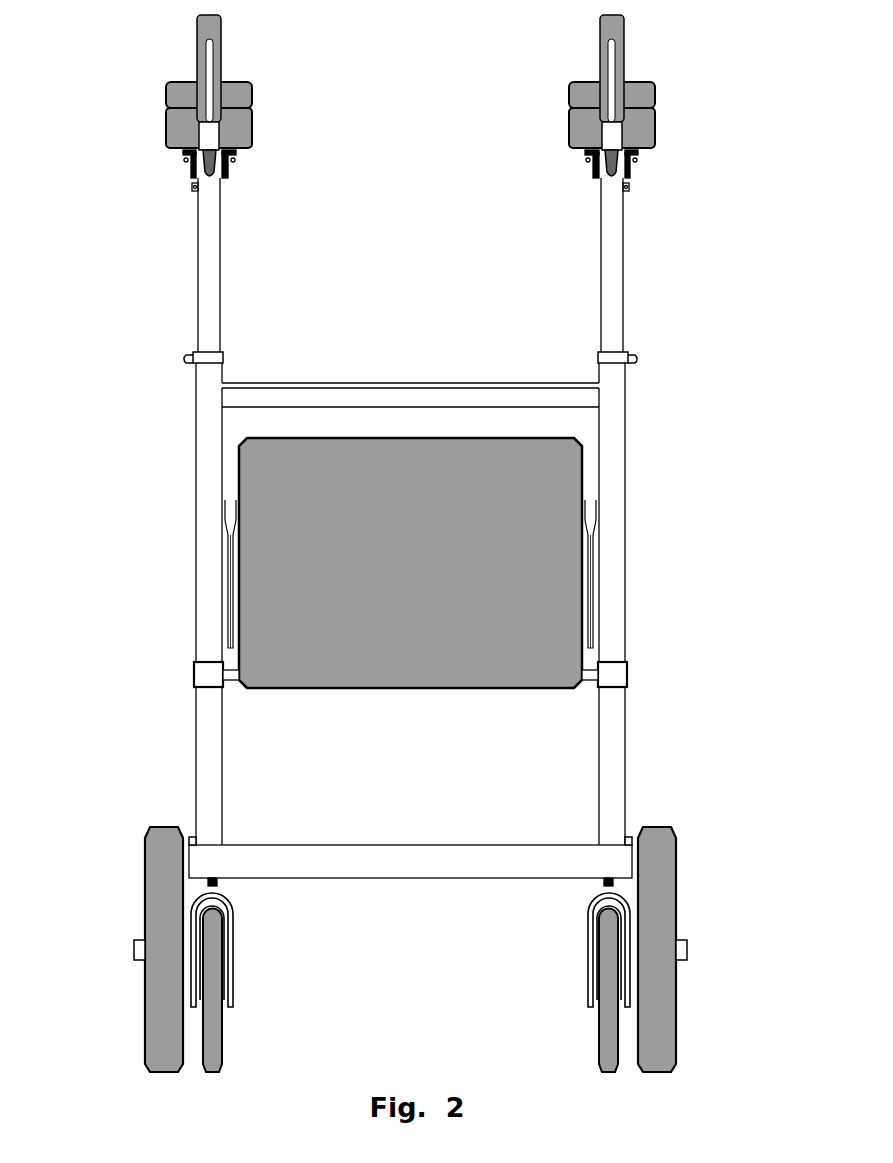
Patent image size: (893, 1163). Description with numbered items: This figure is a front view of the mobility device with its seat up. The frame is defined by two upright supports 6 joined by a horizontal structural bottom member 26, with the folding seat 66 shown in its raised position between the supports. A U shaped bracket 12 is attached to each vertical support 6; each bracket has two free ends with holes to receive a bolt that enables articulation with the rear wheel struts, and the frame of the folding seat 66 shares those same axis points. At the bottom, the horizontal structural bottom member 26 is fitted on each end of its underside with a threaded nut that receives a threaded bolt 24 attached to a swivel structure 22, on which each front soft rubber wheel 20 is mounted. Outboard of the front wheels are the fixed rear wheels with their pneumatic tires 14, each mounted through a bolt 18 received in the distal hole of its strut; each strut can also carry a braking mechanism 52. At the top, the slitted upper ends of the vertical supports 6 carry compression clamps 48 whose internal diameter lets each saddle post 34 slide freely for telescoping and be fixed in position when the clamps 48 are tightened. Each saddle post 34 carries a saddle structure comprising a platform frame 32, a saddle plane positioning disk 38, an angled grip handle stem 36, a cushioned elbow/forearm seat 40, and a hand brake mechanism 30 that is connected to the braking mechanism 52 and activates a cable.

The upright support 6 is at (205, 500).
The U shaped bracket 12 is at (209, 675).
The pneumatic tire 14 is at (163, 902).
The bolt 18 is at (133, 950).
The front soft rubber wheel 20 is at (215, 1025).
The swivel structure 22 is at (230, 930).
The threaded bolt 24 is at (215, 883).
The horizontal structural bottom member 26 is at (353, 863).
The hand brake mechanism 30 is at (212, 45).
The platform frame 32 is at (228, 170).
The saddle post 34 is at (215, 253).
The angled grip handle stem 36 is at (215, 132).
The saddle plane positioning disk 38 is at (196, 183).
The cushioned elbow/forearm seat 40 is at (240, 93).
The compression clamp 48 is at (210, 358).
The braking mechanism 52 is at (197, 840).
The folding seat 66 is at (305, 602).